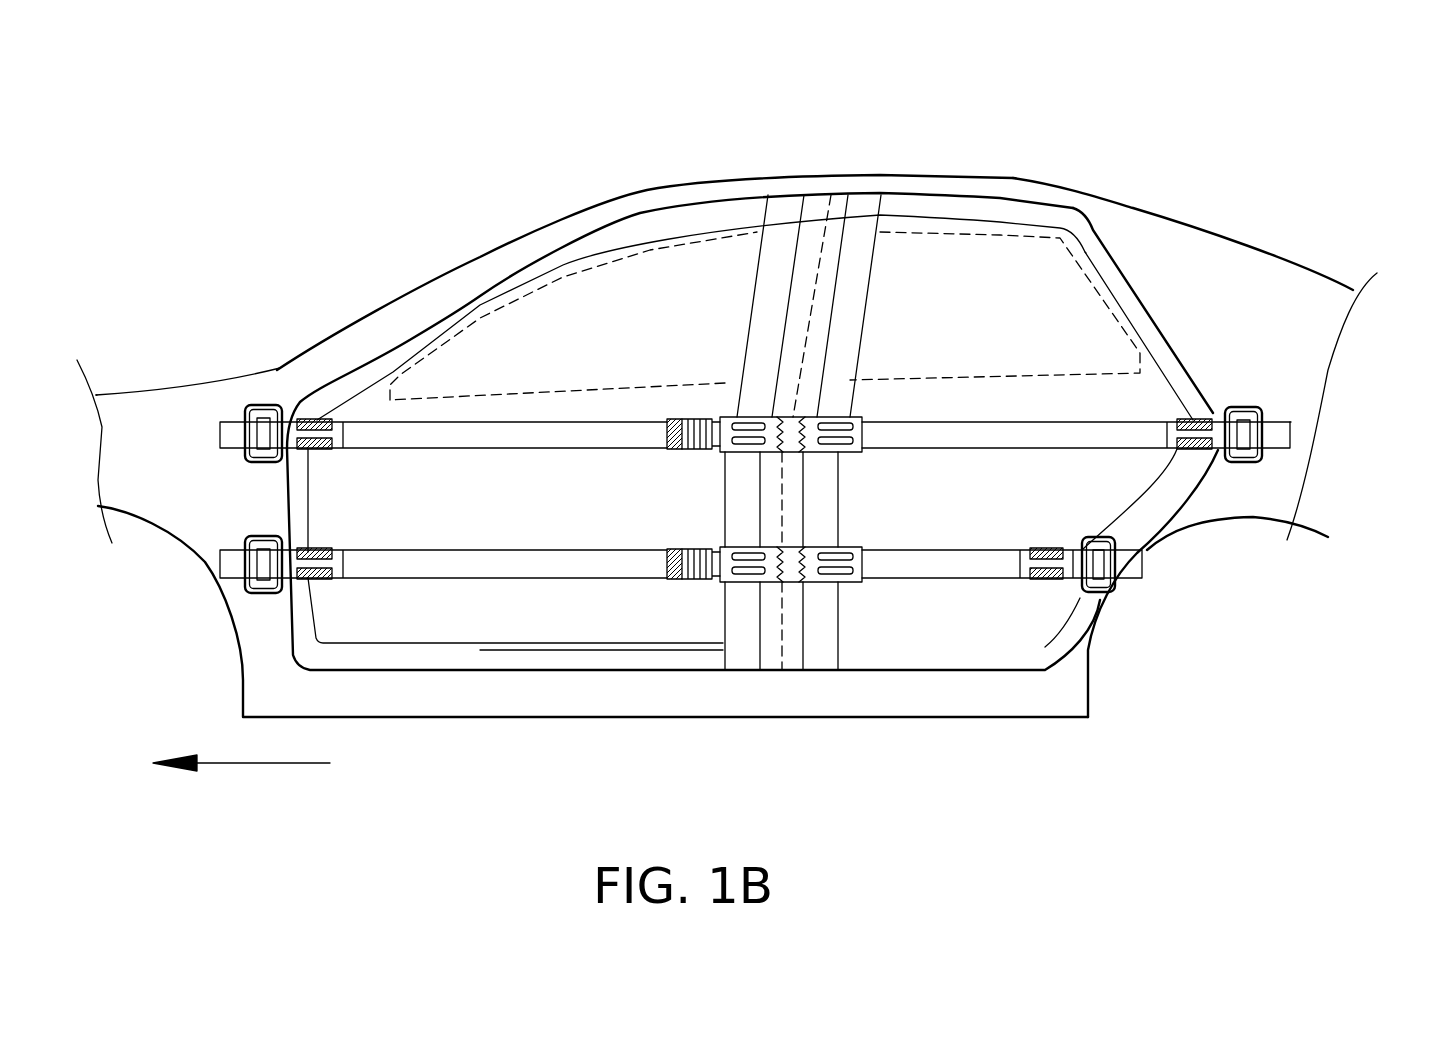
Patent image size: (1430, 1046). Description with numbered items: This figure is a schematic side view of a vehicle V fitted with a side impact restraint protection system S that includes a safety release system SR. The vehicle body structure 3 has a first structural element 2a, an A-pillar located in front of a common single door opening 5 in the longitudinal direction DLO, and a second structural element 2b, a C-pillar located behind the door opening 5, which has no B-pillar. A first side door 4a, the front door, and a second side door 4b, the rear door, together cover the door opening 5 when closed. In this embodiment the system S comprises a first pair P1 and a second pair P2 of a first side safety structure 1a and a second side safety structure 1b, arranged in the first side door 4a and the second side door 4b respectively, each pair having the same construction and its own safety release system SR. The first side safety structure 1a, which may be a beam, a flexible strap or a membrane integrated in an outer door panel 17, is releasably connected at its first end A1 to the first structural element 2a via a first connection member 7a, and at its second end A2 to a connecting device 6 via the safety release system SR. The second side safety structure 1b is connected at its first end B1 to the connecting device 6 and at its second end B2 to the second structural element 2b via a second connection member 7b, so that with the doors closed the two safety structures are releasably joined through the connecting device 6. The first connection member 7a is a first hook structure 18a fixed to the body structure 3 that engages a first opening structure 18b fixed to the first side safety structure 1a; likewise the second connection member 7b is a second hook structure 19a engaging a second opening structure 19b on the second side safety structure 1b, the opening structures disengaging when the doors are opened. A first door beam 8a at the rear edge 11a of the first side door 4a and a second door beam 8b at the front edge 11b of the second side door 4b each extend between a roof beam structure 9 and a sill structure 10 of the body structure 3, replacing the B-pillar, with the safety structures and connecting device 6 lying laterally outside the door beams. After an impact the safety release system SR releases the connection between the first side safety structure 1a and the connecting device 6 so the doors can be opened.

The first side safety structure 1a is at (465, 445).
The second side safety structure 1b is at (963, 563).
The first structural element 2a is at (224, 385).
The second structural element 2b is at (1293, 398).
The vehicle body structure 3 is at (380, 337).
The first side door 4a is at (503, 280).
The second side door 4b is at (937, 207).
The common single door opening 5 is at (725, 294).
The connecting device 6 is at (867, 449).
The first connection member 7a is at (186, 409).
The second connection member 7b is at (1325, 420).
The first door beam 8a is at (783, 240).
The second door beam 8b is at (860, 233).
The roof beam structure 9 is at (815, 185).
The sill structure 10 is at (717, 693).
The rear edge 11a is at (755, 653).
The front edge 11b is at (813, 647).
The outer door panel 17 is at (423, 610).
The first hook structure 18a is at (237, 437).
The first opening structure 18b is at (253, 467).
The second hook structure 19a is at (1262, 435).
The second opening structure 19b is at (1245, 463).
The first end A1 is at (293, 473).
The second end A2 is at (703, 483).
The first end B1 is at (908, 467).
The second end B2 is at (1166, 473).
The first pair P1 is at (1162, 395).
The second pair P2 is at (1039, 609).
The side impact restraint protection system S is at (275, 324).
The safety release system SR is at (660, 432).
The vehicle V is at (1148, 257).
The longitudinal direction DLO is at (241, 784).